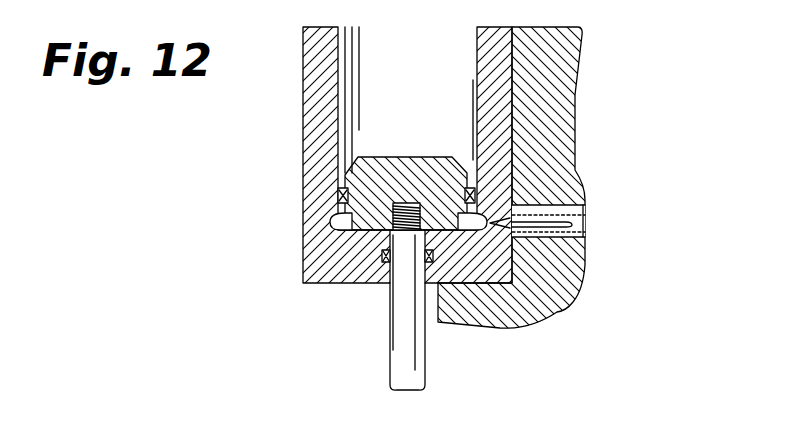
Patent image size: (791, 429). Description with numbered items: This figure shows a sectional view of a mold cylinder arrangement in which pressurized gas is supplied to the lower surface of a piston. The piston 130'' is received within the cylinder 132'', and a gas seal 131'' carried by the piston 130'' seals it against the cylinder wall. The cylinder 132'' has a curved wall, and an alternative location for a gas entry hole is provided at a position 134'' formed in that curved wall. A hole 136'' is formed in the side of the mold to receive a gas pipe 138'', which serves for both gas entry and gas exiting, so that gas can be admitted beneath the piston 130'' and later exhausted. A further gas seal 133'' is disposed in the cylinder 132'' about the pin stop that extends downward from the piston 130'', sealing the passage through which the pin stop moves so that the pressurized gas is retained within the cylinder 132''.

The piston 130'' is at (513, 156).
The gas seal 131'' is at (348, 190).
The cylinder 132'' is at (499, 155).
The gas seal 133'' is at (327, 244).
The gas entry hole position 134'' is at (593, 202).
The hole 136'' is at (604, 221).
The gas pipe 138'' is at (567, 177).